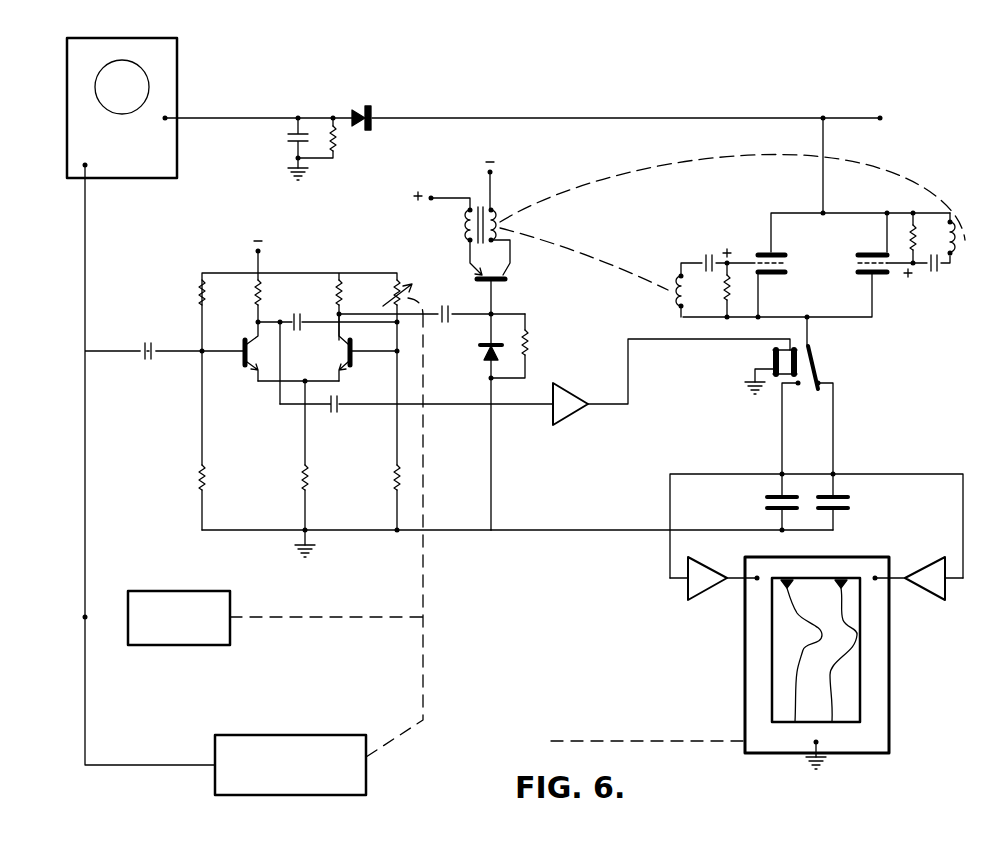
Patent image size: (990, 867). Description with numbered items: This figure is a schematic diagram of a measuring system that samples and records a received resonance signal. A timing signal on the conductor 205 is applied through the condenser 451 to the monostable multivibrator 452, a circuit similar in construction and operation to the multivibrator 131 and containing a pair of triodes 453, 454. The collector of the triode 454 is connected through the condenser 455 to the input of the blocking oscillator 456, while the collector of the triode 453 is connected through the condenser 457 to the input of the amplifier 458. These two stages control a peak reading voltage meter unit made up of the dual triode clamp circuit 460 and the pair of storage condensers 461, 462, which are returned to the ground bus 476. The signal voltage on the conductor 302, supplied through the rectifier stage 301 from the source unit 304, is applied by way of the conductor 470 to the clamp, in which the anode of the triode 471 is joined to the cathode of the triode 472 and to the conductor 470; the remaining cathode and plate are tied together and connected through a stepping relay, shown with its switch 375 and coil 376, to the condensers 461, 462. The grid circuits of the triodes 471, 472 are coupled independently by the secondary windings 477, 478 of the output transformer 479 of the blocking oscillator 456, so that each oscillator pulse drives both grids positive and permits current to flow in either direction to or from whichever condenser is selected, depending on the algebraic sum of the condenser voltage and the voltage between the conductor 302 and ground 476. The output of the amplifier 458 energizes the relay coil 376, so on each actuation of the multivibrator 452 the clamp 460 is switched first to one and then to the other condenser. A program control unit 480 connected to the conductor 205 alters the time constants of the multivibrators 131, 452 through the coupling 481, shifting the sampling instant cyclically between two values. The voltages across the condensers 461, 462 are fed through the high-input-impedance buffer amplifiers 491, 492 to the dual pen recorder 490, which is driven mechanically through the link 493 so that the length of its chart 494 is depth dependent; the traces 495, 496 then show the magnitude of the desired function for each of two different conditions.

The multivibrator 131 is at (290, 765).
The conductor 205 is at (85, 383).
The rectifier circuit 301 is at (348, 105).
The conductor 302 is at (858, 103).
The power source unit 304 is at (170, 73).
The switch 375 is at (820, 360).
The relay coil 376 is at (770, 360).
The condenser 451 is at (142, 343).
The monostable multivibrator 452 is at (313, 299).
The triode 453 is at (235, 357).
The triode 454 is at (353, 358).
The condenser 455 is at (444, 330).
The blocking oscillator 456 is at (538, 304).
The condenser 457 is at (331, 420).
The amplifier 458 is at (572, 393).
The dual triode clamp circuit 460 is at (842, 274).
The storage condenser 461 is at (765, 502).
The storage condenser 462 is at (850, 502).
The conductor 470 is at (823, 170).
The triode 471 is at (762, 254).
The triode 472 is at (872, 252).
The ground bus 476 is at (595, 529).
The secondary winding 477 is at (677, 305).
The secondary winding 478 is at (955, 255).
The output transformer 479 is at (483, 208).
The program control unit 480 is at (197, 590).
The coupling 481 is at (423, 578).
The recorder 490 is at (762, 748).
The buffer amplifier 491 is at (707, 573).
The buffer amplifier 492 is at (931, 557).
The link 493 is at (650, 740).
The chart 494 is at (850, 685).
The trace 495 is at (818, 632).
The trace 496 is at (845, 622).